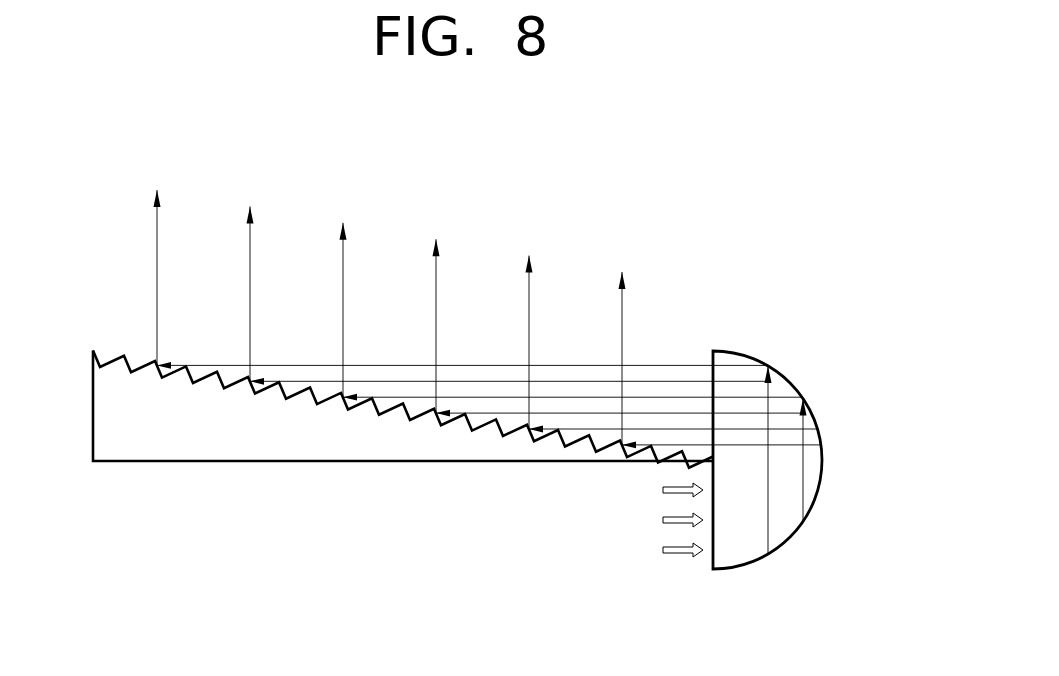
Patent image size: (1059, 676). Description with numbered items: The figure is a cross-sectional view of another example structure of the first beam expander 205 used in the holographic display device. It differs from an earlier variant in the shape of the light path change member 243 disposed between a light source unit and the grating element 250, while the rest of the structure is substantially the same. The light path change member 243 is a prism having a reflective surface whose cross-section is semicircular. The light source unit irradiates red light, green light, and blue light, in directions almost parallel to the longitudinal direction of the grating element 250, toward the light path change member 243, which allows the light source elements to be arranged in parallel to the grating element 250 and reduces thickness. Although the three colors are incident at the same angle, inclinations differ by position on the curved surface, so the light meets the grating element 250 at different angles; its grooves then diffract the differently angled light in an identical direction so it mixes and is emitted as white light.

The first beam expander 205 is at (713, 223).
The light path change member 243 is at (785, 368).
The grating element 250 is at (223, 448).